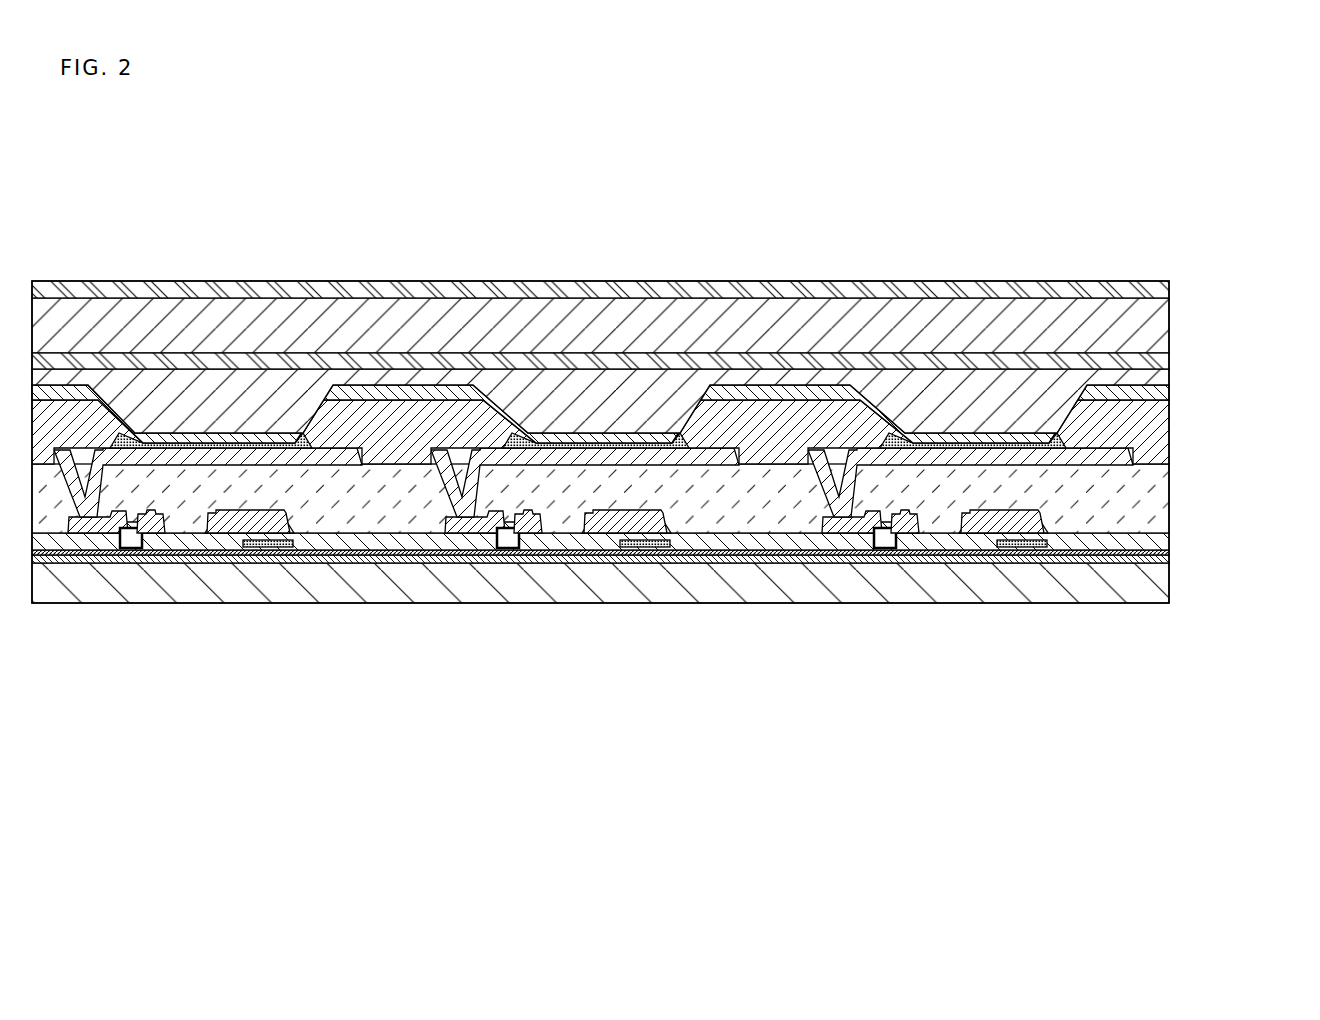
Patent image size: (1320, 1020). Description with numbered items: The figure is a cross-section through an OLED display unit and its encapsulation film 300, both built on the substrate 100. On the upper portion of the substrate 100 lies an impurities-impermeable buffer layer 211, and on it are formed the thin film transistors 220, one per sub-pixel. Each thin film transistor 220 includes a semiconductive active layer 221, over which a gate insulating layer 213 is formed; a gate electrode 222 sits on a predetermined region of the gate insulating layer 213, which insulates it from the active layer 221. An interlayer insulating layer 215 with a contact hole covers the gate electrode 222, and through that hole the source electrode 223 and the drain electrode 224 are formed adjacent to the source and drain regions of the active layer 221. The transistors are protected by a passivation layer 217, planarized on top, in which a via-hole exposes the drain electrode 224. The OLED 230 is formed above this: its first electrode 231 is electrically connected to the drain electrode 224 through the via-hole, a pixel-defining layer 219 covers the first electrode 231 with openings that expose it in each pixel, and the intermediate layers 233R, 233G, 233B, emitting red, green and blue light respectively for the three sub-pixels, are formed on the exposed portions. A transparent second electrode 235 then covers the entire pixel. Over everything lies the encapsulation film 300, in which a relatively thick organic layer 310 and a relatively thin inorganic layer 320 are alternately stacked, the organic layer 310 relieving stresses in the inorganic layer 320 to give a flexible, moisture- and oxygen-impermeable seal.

The substrate 100 is at (1160, 583).
The buffer layer 211 is at (1160, 562).
The gate insulating layer 213 is at (1160, 552).
The interlayer insulating layer 215 is at (1160, 543).
The passivation layer 217 is at (1159, 497).
The pixel-defining layer 219 is at (1160, 434).
The thin film transistor 220 is at (558, 606).
The active layer 221 is at (905, 553).
The gate electrode 222 is at (880, 553).
The source electrode 223 is at (822, 664).
The drain electrode 224 is at (840, 553).
The organic light-emitting diode 230 is at (645, 354).
The first electrode 231 is at (942, 458).
The red intermediate layer 233R is at (213, 445).
The green intermediate layer 233G is at (592, 445).
The blue intermediate layer 233B is at (1012, 445).
The second electrode 235 is at (941, 227).
The encapsulation film 300 is at (676, 353).
The organic layer 310 is at (1158, 323).
The inorganic layer 320 is at (645, 322).